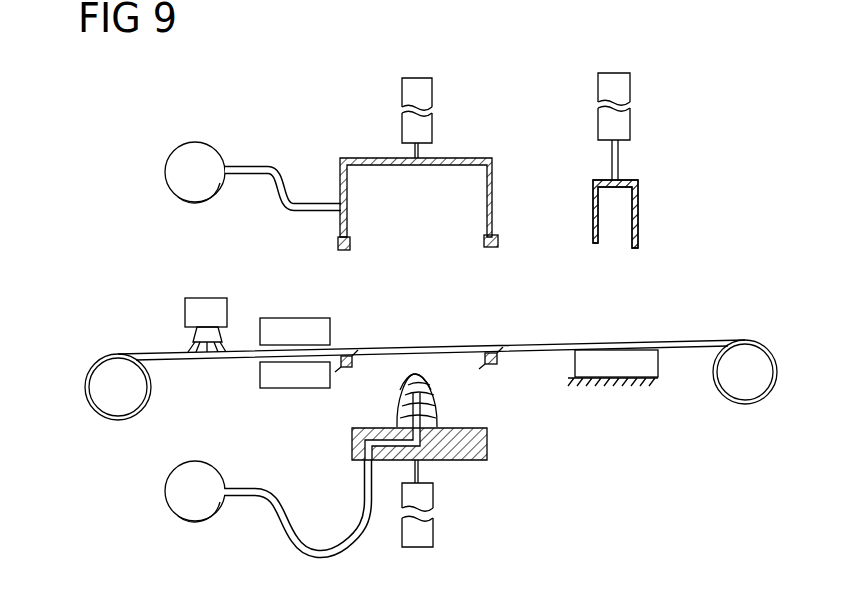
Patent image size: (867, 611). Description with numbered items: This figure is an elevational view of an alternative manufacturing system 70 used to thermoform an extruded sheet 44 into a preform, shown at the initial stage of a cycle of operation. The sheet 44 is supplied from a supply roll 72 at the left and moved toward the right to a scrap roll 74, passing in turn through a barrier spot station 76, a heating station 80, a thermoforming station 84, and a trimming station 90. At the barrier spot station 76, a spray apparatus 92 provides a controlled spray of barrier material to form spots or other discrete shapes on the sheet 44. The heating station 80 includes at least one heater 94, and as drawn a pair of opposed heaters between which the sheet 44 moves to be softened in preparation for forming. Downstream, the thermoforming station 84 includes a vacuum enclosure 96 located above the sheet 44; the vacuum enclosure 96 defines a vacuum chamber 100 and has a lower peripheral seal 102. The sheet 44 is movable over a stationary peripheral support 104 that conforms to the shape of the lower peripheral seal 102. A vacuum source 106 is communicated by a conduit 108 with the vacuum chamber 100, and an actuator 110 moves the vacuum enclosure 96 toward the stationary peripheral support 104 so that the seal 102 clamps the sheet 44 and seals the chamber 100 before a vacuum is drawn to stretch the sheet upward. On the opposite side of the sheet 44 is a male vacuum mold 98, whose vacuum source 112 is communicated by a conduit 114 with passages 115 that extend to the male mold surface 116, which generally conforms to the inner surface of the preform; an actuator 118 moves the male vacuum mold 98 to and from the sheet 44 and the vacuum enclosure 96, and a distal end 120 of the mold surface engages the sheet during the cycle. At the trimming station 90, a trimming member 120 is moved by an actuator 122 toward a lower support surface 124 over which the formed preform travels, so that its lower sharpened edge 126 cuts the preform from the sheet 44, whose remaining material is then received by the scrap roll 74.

The extruded sheet 44 is at (172, 364).
The manufacturing system 70 is at (304, 104).
The supply roll 72 is at (98, 383).
The scrap roll 74 is at (741, 388).
The barrier spot station 76 is at (212, 292).
The heating station 80 is at (297, 297).
The thermoforming station 84 is at (376, 110).
The trimming station 90 is at (660, 94).
The spray apparatus 92 is at (189, 296).
The heater 94 is at (272, 318).
The vacuum enclosure 96 is at (500, 158).
The male vacuum mold 98 is at (497, 460).
The vacuum chamber 100 is at (476, 200).
The lower peripheral seal 102 is at (352, 246).
The stationary peripheral support 104 is at (346, 370).
The vacuum source 106 is at (183, 144).
The conduit 108 is at (279, 165).
The actuator 110 is at (433, 95).
The vacuum source 112 is at (183, 506).
The conduit 114 is at (291, 549).
The passages 115 is at (439, 408).
The male mold surface 116 is at (403, 396).
The actuator 118 is at (434, 535).
The trimming member 120 is at (639, 203).
The actuator 122 is at (632, 121).
The lower support surface 124 is at (639, 372).
The lower sharpened edge 126 is at (634, 247).